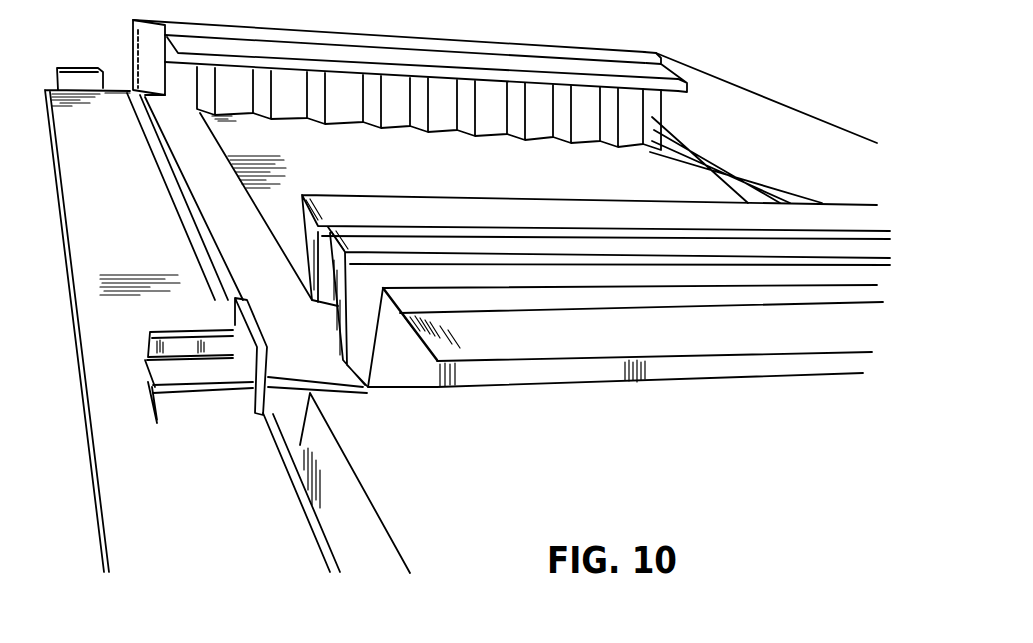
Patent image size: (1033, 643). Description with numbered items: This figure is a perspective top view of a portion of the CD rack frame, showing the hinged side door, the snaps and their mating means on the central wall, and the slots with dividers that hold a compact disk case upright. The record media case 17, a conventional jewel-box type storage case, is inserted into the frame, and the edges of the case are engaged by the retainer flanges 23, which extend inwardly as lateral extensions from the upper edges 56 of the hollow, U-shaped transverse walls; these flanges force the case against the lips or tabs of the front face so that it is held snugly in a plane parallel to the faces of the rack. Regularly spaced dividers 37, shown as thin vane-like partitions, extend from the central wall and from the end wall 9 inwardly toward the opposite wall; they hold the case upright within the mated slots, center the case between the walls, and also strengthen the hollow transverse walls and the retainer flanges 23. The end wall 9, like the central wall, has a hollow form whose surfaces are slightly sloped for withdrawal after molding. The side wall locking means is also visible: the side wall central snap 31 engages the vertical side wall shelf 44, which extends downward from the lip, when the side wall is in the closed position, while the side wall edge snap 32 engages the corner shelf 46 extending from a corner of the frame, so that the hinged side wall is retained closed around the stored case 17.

The end wall 9 is at (400, 48).
The record media case 17 is at (400, 494).
The retainer flanges 23 is at (672, 370).
The side wall central snap 31 is at (208, 407).
The side wall edge snap 32 is at (77, 78).
The dividers 37 is at (402, 365).
The vertical side wall shelf 44 is at (263, 336).
The corner shelf 46 is at (137, 47).
The upper edges 56 is at (683, 255).